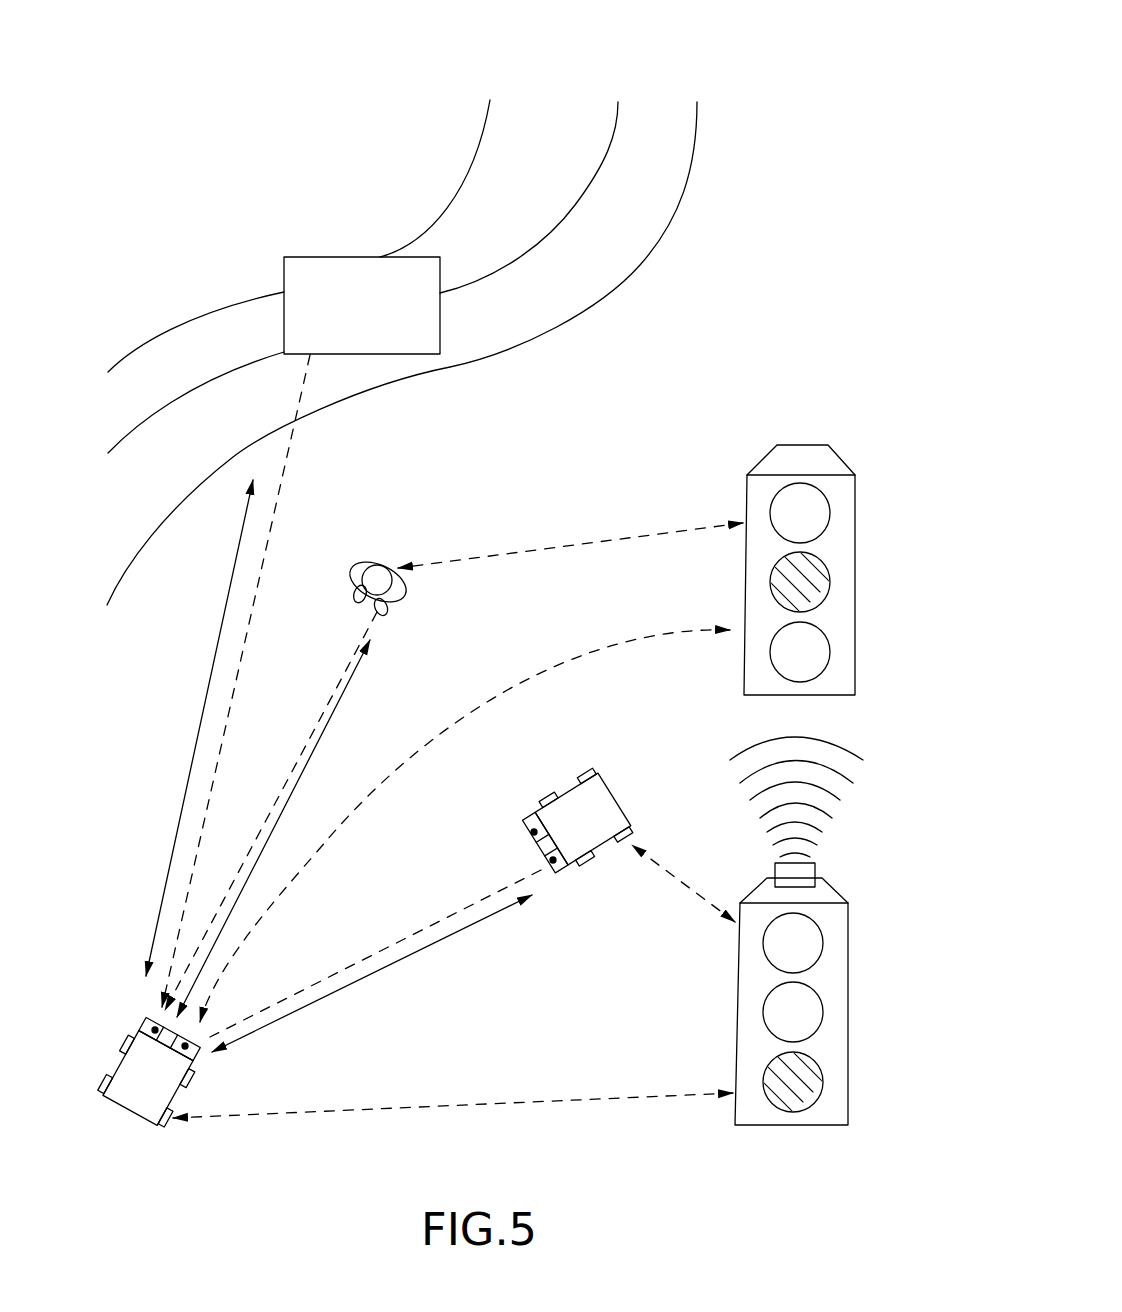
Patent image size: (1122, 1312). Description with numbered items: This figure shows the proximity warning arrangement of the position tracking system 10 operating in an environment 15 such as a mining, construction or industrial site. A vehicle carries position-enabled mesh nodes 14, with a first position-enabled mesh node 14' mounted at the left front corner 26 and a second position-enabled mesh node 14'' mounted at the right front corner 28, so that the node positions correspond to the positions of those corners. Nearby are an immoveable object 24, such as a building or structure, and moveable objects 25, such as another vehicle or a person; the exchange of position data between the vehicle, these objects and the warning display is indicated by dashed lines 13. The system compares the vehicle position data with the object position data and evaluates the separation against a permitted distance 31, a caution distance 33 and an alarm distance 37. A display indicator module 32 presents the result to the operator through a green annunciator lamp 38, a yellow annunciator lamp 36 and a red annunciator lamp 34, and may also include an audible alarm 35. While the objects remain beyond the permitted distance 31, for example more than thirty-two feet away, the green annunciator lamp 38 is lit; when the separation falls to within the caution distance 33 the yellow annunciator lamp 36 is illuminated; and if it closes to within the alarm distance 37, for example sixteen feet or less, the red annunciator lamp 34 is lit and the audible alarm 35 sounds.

The position tracking system 10 is at (822, 107).
The communication link 13 is at (286, 463).
The position-enabled mesh node 14 is at (152, 1071).
The first position-enabled mesh node 14' is at (346, 945).
The second position-enabled mesh node 14'' is at (359, 949).
The environment 15 is at (660, 108).
The immoveable object 24 is at (440, 265).
The moveable object 25 is at (366, 565).
The left front corner 26 is at (155, 1030).
The right front corner 28 is at (185, 1046).
The permitted distance 31 is at (207, 694).
The display indicator module 32 is at (829, 771).
The caution distance 33 is at (330, 720).
The red annunciator lamp 34 is at (830, 652).
The audible alarm 35 is at (815, 868).
The yellow annunciator lamp 36 is at (830, 582).
The alarm distance 37 is at (382, 968).
The green annunciator lamp 38 is at (830, 512).